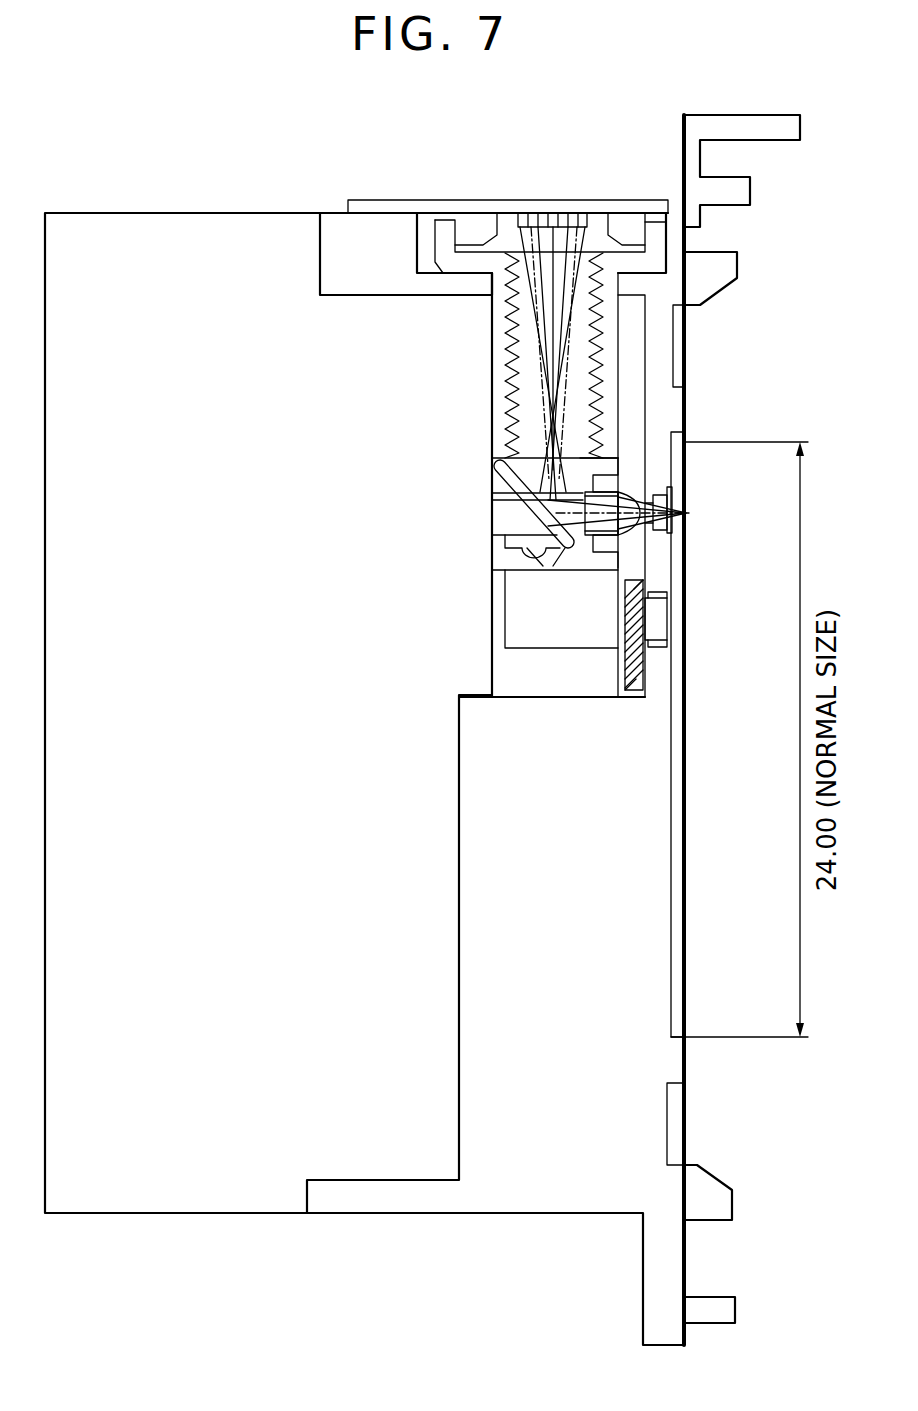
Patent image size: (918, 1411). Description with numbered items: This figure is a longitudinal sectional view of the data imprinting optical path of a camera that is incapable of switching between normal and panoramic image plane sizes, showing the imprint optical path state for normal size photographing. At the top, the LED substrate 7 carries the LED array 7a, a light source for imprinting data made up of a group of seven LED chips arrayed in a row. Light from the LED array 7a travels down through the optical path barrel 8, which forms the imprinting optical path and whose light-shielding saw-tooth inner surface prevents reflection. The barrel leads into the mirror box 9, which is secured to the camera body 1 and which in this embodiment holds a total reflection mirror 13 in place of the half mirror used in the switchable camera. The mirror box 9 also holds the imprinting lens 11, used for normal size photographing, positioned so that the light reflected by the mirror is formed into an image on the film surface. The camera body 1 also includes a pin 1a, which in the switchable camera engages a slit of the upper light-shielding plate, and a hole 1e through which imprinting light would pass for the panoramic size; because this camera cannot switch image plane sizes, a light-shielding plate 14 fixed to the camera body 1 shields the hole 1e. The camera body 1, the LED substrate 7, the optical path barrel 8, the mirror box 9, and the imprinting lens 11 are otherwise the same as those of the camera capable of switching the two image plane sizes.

The camera body 1 is at (190, 226).
The pin 1a is at (668, 530).
The hole 1e is at (665, 627).
The substrate 7 is at (368, 205).
The LED array 7a is at (513, 192).
The optical path barrel 8 is at (498, 408).
The mirror box 9 is at (492, 546).
The lens 11 is at (628, 489).
The total reflection mirror 13 is at (491, 491).
The light-shielding plate 14 is at (643, 670).